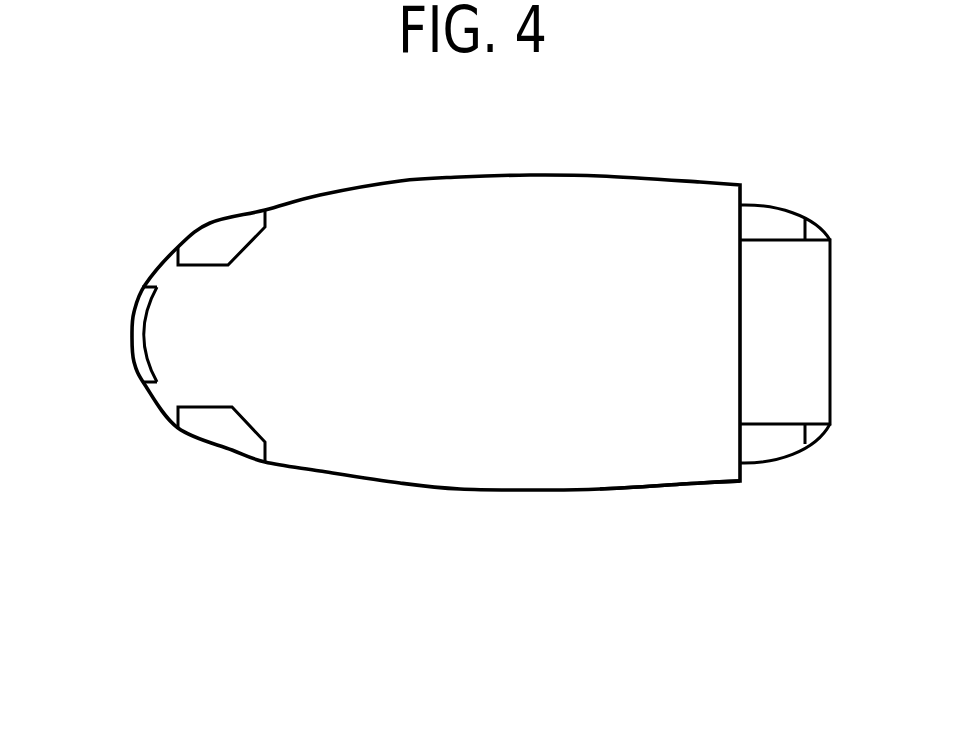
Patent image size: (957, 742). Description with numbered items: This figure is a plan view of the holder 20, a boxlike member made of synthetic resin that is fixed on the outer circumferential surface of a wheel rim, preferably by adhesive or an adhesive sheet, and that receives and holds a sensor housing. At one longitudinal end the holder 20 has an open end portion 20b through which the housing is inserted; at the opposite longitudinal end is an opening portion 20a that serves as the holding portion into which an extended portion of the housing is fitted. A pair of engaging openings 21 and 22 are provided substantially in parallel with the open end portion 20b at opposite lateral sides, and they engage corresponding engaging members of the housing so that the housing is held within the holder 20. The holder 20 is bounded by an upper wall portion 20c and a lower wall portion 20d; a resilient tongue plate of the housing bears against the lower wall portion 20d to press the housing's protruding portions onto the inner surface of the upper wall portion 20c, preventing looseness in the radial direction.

The holder 20 is at (473, 500).
The opening portion 20a is at (143, 333).
The open end portion 20b is at (745, 230).
The upper wall portion 20c is at (658, 472).
The lower wall portion 20d is at (795, 413).
The engaging opening 21 is at (245, 242).
The engaging opening 22 is at (243, 427).